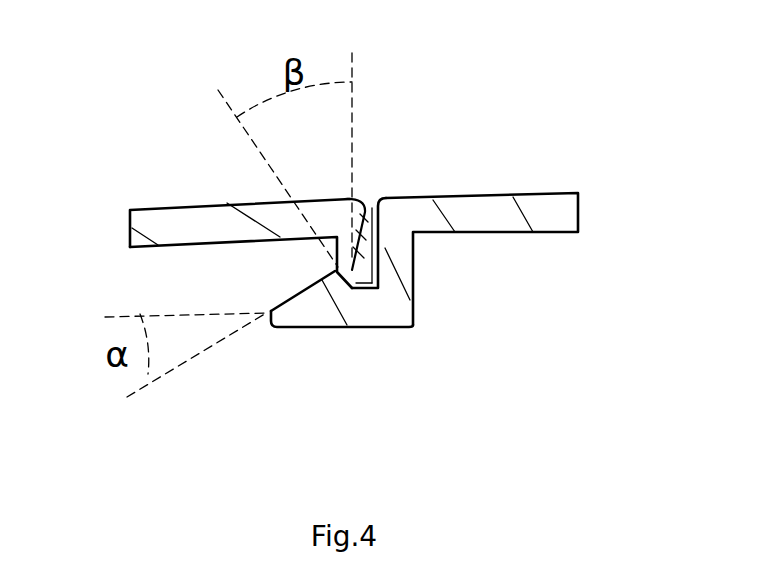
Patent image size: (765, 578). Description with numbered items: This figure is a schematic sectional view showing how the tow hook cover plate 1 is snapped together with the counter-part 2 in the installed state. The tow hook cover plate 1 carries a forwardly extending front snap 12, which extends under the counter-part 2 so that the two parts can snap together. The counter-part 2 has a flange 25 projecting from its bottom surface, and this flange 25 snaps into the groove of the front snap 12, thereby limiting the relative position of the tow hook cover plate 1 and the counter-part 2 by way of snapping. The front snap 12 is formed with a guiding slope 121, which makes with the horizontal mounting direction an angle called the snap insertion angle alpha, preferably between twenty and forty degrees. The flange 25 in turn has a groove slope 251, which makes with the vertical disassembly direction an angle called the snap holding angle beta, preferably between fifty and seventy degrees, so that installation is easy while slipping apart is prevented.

The tow hook cover plate 1 is at (547, 206).
The counter-part 2 is at (160, 230).
The front snap 12 is at (313, 314).
The guiding slope 121 is at (287, 291).
The flange 25 is at (362, 199).
The groove slope 251 is at (376, 292).